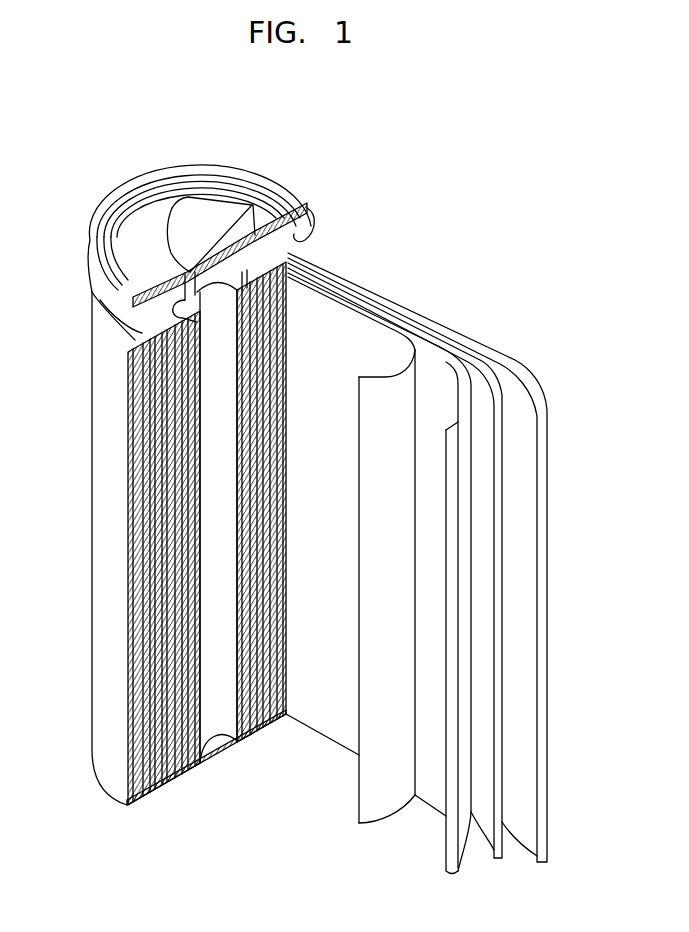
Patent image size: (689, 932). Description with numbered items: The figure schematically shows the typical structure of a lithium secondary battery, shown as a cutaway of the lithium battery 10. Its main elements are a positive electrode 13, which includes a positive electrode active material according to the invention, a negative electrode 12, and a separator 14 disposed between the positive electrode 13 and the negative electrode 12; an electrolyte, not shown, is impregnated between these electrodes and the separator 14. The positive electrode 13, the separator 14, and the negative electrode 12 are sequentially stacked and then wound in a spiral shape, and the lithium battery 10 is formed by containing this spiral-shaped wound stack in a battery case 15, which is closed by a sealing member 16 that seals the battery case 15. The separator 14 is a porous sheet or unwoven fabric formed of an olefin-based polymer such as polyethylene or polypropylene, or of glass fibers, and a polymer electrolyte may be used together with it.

The lithium battery 10 is at (268, 125).
The negative electrode 12 is at (528, 388).
The positive electrode 13 is at (460, 383).
The separator 14 is at (390, 378).
The battery case 15 is at (95, 527).
The sealing member 16 is at (191, 212).